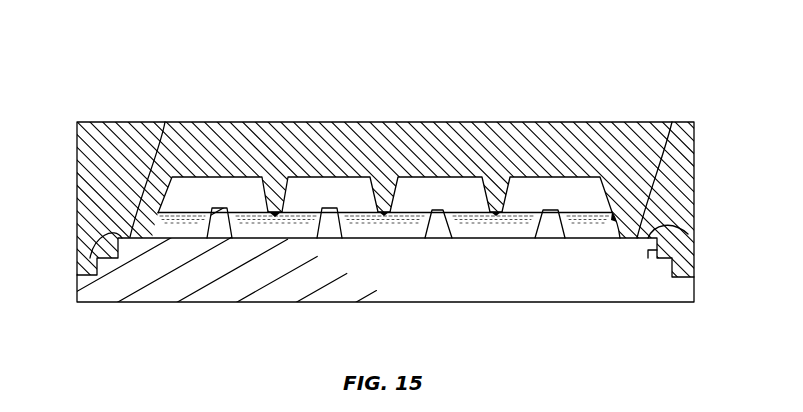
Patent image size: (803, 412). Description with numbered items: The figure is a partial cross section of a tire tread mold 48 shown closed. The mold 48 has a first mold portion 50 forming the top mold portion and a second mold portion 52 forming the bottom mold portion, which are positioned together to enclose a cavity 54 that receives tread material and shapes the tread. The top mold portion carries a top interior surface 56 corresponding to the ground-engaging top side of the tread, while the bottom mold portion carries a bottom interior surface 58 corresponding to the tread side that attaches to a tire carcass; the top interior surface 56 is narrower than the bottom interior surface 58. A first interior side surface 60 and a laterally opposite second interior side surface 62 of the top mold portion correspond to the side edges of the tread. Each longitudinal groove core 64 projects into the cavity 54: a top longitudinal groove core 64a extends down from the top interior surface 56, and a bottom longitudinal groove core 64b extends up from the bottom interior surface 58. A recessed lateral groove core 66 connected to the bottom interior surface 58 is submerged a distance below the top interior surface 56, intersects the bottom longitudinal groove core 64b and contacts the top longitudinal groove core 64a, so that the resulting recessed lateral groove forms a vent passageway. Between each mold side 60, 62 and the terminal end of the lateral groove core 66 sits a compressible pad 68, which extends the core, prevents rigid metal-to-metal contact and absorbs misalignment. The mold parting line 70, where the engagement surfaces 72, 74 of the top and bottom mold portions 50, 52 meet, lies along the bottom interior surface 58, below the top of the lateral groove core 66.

The mold 48 is at (121, 32).
The first mold portion 50 is at (230, 122).
The second mold portion 52 is at (128, 302).
The cavity 54 is at (249, 208).
The top interior surface 56 is at (336, 181).
The bottom interior surface 58 is at (480, 237).
The first interior side surface 60 is at (174, 186).
The second interior side surface 62 is at (602, 184).
The longitudinal groove core 64 is at (442, 212).
The top longitudinal groove core 64a is at (383, 200).
The bottom longitudinal groove core 64b is at (437, 223).
The recessed lateral groove core 66 is at (195, 228).
The compressible pad 68 is at (163, 227).
The mold parting line 70 is at (165, 122).
The engagement surface 72 is at (689, 232).
The engagement surface 74 is at (91, 250).